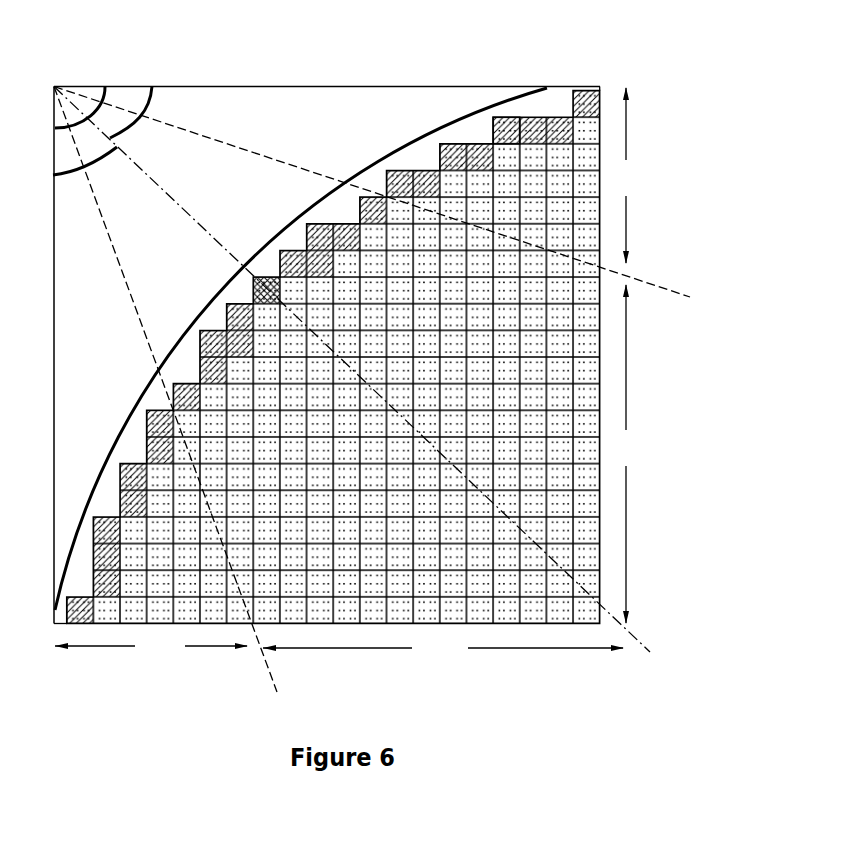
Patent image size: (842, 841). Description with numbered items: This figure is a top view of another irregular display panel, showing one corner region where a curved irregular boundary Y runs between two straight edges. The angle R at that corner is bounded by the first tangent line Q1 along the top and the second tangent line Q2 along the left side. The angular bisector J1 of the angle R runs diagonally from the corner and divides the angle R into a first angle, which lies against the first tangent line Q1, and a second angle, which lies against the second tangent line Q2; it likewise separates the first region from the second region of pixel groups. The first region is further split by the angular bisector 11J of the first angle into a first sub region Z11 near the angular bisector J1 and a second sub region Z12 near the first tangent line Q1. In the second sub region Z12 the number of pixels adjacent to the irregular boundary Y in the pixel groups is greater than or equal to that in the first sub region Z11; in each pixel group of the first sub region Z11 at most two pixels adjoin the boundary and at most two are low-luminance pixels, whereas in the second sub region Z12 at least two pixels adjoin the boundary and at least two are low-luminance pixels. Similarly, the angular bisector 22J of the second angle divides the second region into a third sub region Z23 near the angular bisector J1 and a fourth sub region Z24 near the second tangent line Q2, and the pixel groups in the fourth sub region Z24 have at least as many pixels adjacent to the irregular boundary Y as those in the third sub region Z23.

The first tangent line Q1 is at (266, 86).
The second tangent line Q2 is at (53, 258).
The angular bisector of the first angle 11J is at (265, 140).
The angular bisector of the second angle 22J is at (112, 243).
The angular bisector of the angle R J1 is at (158, 190).
The angle R is at (80, 115).
The irregular boundary Y is at (135, 405).
The second sub region Z12 is at (635, 175).
The first sub region Z11 is at (638, 454).
The fourth sub region Z24 is at (151, 650).
The third sub region Z23 is at (443, 652).